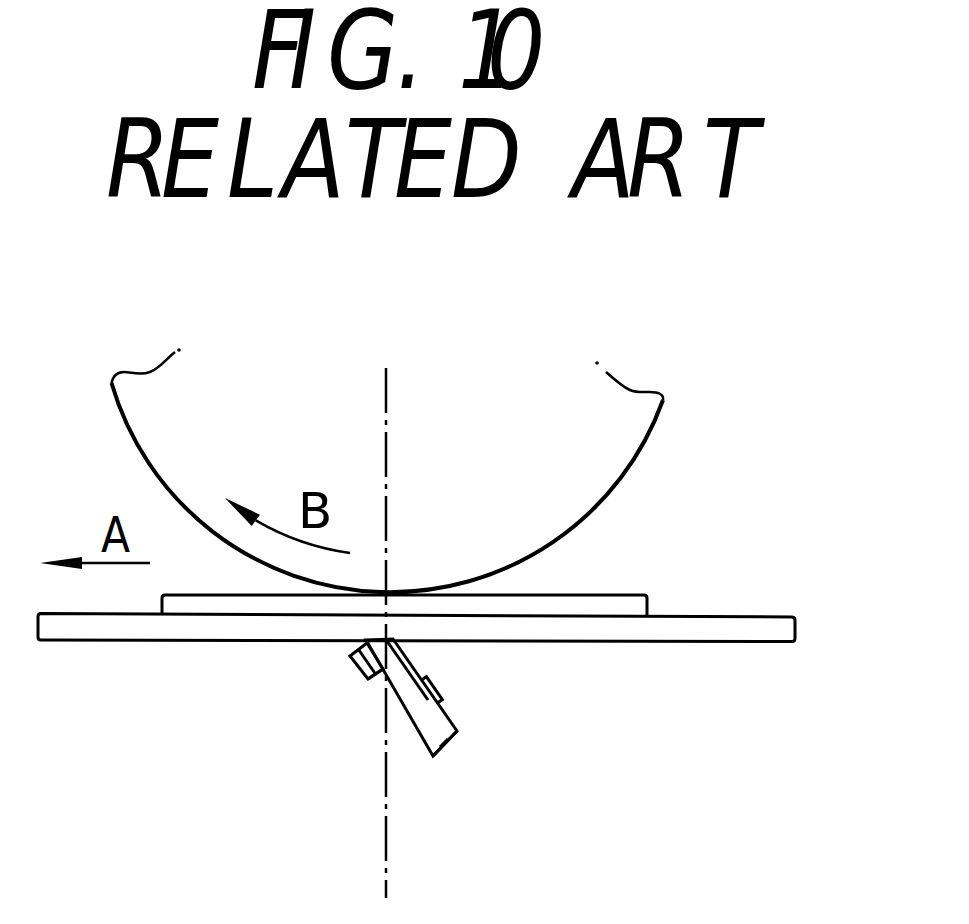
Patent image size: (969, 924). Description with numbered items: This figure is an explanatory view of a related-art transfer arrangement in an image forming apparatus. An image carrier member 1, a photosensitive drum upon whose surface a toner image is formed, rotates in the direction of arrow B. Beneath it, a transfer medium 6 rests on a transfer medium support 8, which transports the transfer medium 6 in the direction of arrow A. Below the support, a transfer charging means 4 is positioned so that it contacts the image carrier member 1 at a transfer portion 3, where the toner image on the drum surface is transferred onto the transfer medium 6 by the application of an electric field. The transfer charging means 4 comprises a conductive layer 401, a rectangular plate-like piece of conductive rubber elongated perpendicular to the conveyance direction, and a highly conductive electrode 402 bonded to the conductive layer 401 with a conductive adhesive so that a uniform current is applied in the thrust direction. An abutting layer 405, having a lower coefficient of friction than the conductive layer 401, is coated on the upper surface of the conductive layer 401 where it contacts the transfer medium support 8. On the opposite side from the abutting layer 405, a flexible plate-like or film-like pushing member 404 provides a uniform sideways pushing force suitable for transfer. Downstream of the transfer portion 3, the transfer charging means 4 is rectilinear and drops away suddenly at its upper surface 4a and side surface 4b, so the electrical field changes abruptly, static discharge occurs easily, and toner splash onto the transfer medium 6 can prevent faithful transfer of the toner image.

The image carrier member 1 is at (632, 433).
The transfer portion 3 is at (412, 563).
The transfer charging means 4 is at (389, 763).
The upper surface 4a is at (358, 652).
The side surface 4b is at (366, 684).
The transfer medium 6 is at (648, 597).
The transfer medium support 8 is at (792, 620).
The conductive layer 401 is at (453, 728).
The electrode 402 is at (438, 752).
The pushing member 404 is at (362, 672).
The abutting layer 405 is at (440, 676).